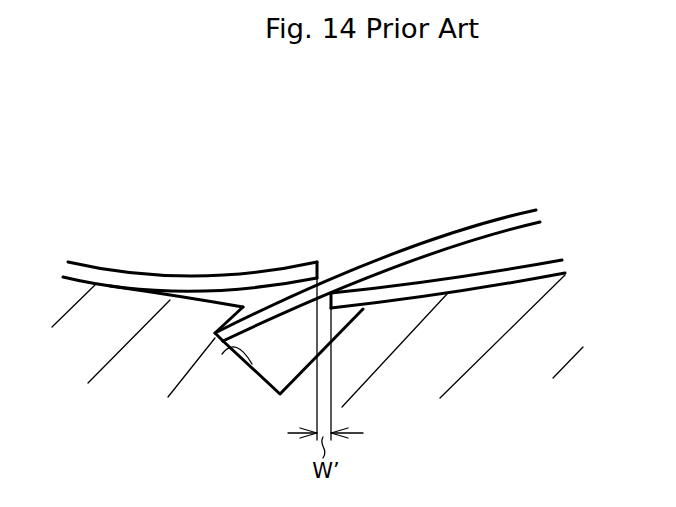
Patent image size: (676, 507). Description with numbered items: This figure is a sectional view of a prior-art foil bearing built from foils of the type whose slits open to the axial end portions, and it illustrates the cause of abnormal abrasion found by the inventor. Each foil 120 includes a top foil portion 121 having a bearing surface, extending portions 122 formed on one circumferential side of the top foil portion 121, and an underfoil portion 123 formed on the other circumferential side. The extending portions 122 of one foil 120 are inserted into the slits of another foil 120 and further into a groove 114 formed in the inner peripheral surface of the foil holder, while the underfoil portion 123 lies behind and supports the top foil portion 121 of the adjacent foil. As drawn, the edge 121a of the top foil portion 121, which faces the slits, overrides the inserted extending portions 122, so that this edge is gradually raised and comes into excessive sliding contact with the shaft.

The foil 120 is at (117, 271).
The top foil portion 121 is at (200, 291).
The edge of the top foil portion 121a is at (320, 263).
The extending portions 122 is at (262, 318).
The underfoil portion 123 is at (384, 292).
The groove 114 is at (227, 355).